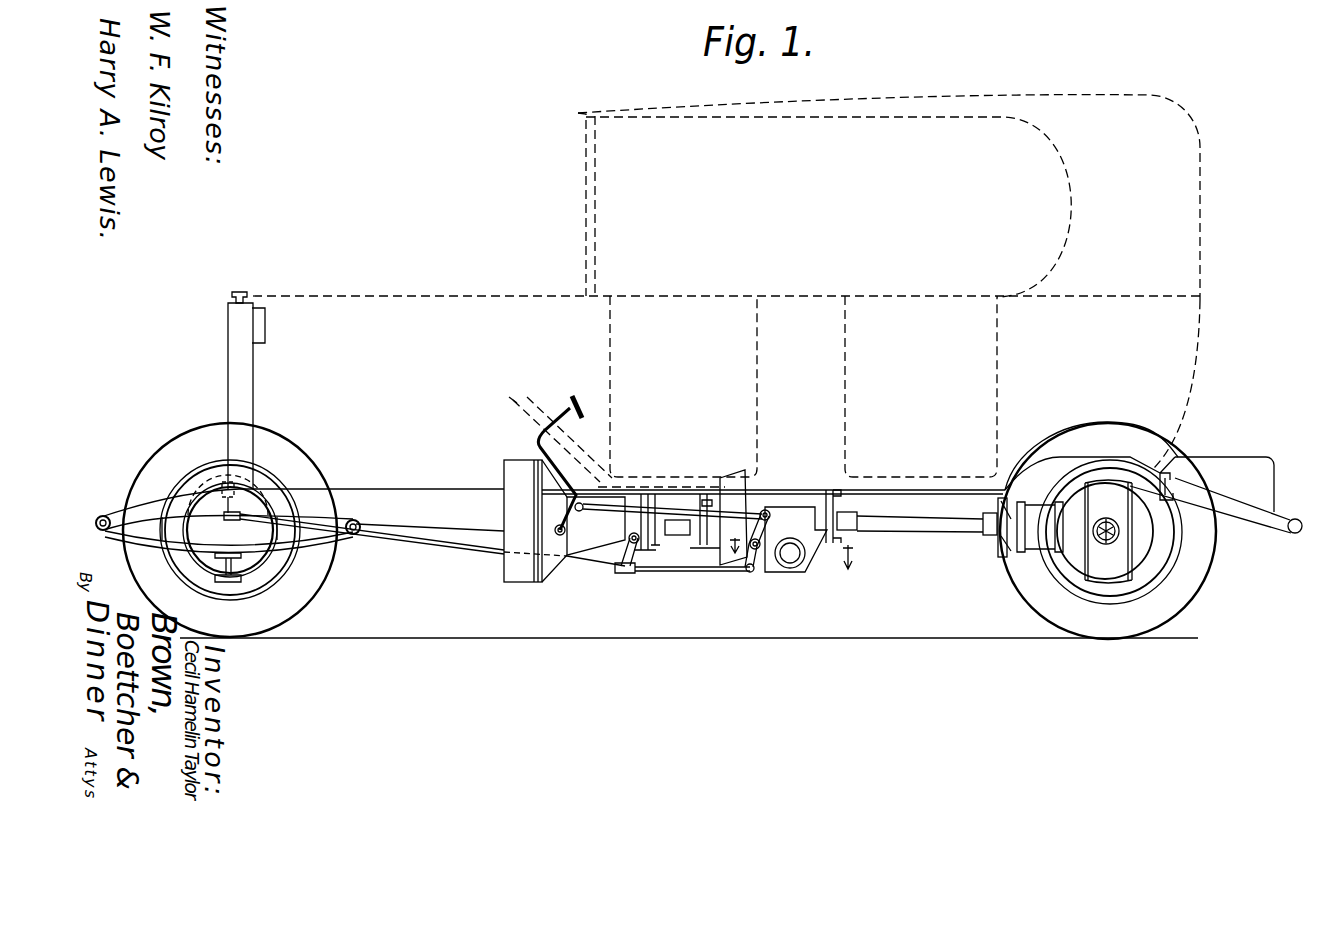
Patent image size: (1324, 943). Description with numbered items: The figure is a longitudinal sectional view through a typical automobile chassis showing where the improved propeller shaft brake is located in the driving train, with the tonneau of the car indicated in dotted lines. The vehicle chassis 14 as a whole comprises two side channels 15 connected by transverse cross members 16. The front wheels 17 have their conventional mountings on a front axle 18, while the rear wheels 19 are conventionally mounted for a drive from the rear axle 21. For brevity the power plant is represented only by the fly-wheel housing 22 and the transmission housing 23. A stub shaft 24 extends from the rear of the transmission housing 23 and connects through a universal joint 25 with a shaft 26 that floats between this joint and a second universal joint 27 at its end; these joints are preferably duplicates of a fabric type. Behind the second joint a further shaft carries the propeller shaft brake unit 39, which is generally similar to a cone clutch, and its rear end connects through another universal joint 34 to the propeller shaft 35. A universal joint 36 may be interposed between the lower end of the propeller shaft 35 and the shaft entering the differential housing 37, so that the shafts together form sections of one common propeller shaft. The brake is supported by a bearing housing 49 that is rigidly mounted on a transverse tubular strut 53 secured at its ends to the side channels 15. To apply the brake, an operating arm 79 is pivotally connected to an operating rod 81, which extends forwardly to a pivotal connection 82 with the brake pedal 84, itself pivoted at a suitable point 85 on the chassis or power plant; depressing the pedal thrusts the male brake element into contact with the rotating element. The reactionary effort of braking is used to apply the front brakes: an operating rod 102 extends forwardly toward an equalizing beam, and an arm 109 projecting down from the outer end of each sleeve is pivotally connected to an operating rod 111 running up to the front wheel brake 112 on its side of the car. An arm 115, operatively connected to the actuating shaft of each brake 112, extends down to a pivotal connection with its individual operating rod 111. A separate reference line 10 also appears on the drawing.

The axis arrows / direction indicators 10 is at (799, 546).
The vehicle chassis 14 is at (143, 514).
The side channels 15 is at (438, 498).
The transverse cross members 16 is at (1163, 482).
The front wheels 17 is at (201, 438).
The front axle 18 is at (228, 584).
The rear wheels 19 is at (1210, 556).
The rear axle 21 is at (1106, 523).
The fly-wheel housing 22 is at (498, 581).
The transmission housing 23 is at (567, 545).
The stub shaft 24 is at (633, 500).
The universal joint 25 is at (654, 510).
The shaft 26 is at (680, 527).
The universal joint 27 is at (697, 500).
The universal joint 34 is at (830, 490).
The propeller shaft 35 is at (930, 531).
The universal joint 36 is at (998, 540).
The differential housing 37 is at (1072, 545).
The propeller shaft brake unit 39 is at (730, 474).
The bearing housing 49 is at (803, 508).
The tubular strut 53 is at (805, 568).
The operating arm 79 is at (766, 535).
The operating rod 81 is at (727, 516).
The pivotal connection 82 is at (582, 511).
The brake pedal 84 is at (558, 410).
The pivot point 85 is at (555, 528).
The operating rod 102 is at (705, 571).
The arm 109 is at (630, 565).
The operating rod 111 is at (466, 548).
The front wheel brake 112 is at (215, 563).
The arm 115 is at (227, 507).